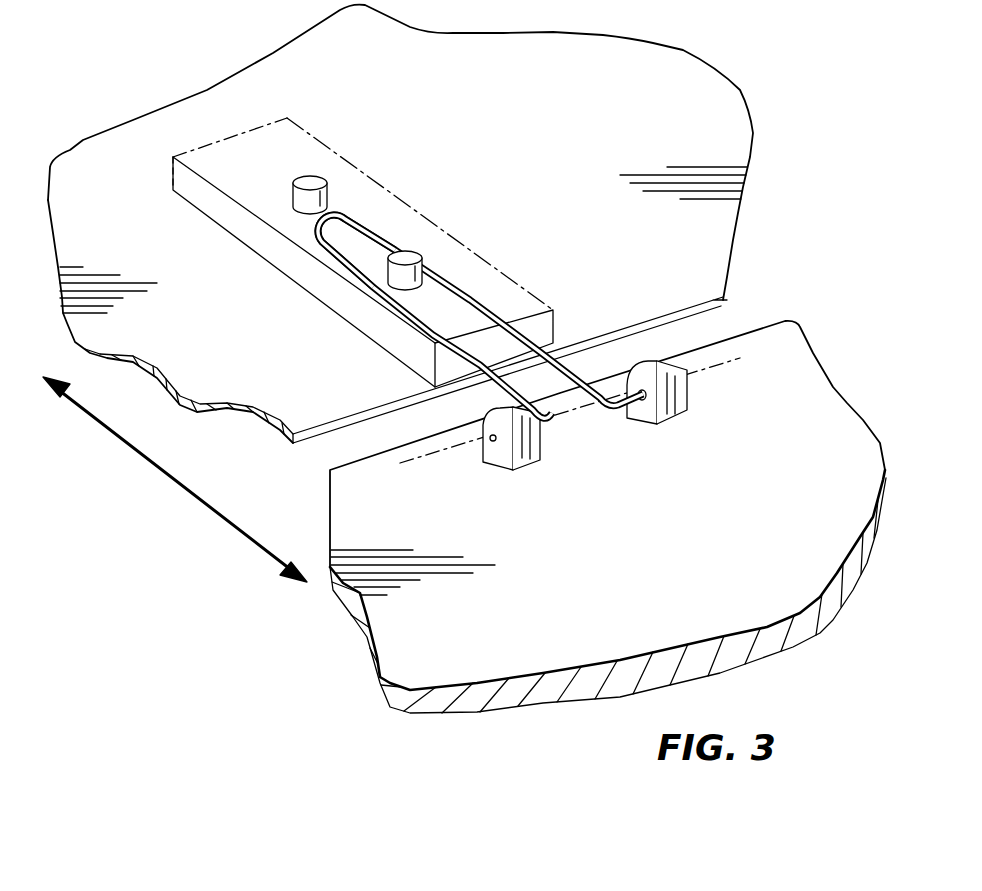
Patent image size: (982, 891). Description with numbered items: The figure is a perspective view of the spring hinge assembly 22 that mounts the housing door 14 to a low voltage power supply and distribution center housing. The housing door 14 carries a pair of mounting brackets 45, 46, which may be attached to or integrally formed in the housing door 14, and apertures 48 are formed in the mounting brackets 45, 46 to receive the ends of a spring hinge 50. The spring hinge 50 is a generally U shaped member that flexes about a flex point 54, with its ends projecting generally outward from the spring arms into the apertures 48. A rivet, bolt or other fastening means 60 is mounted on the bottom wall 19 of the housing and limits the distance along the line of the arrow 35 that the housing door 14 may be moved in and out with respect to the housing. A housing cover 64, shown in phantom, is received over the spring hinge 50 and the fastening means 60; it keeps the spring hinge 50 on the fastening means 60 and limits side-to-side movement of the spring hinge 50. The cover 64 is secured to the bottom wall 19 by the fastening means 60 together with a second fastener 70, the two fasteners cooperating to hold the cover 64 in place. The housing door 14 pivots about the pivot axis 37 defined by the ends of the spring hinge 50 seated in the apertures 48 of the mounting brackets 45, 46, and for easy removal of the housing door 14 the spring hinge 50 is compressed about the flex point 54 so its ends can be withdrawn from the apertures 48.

The housing door 14 is at (820, 418).
The bottom wall 19 is at (697, 237).
The spring hinge assembly 22 is at (767, 123).
The arrow 35 is at (230, 513).
The pivot axis 37 is at (738, 360).
The mounting bracket 45 is at (510, 457).
The mounting bracket 46 is at (680, 410).
The apertures 48 is at (647, 400).
The spring hinge 50 is at (577, 376).
The flex point 54 is at (338, 214).
The fastening means 60 is at (410, 262).
The housing cover 64 is at (293, 247).
The second fastener 70 is at (315, 186).